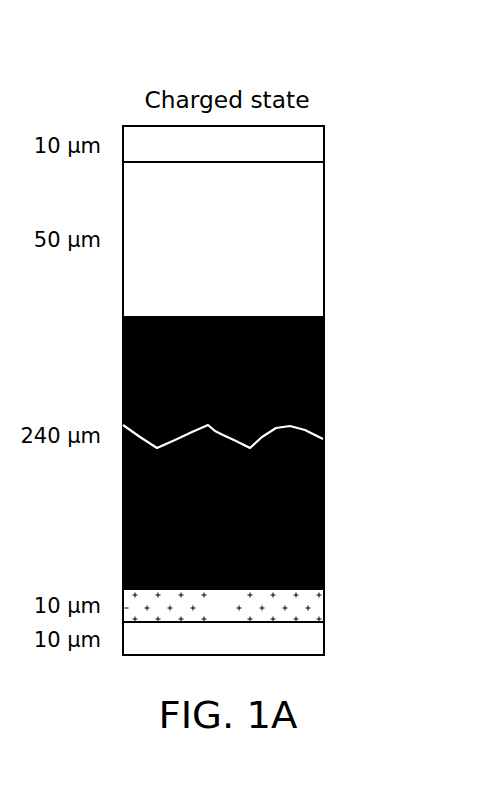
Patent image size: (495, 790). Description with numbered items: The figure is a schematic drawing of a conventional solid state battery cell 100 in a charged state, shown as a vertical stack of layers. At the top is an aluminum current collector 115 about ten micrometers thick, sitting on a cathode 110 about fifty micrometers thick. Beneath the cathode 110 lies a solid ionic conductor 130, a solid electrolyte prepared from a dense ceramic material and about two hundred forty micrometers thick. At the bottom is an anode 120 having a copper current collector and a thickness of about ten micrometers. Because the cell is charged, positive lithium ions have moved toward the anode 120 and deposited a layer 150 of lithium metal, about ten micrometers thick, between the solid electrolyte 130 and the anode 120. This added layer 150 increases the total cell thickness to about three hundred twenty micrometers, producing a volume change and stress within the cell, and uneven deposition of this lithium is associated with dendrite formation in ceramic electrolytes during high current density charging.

The battery cell 100 is at (176, 62).
The aluminum current collector 115 is at (324, 141).
The cathode 110 is at (324, 233).
The solid ionic conductor 130 is at (324, 379).
The layer of lithium metal 150 is at (324, 603).
The anode 120 is at (324, 641).